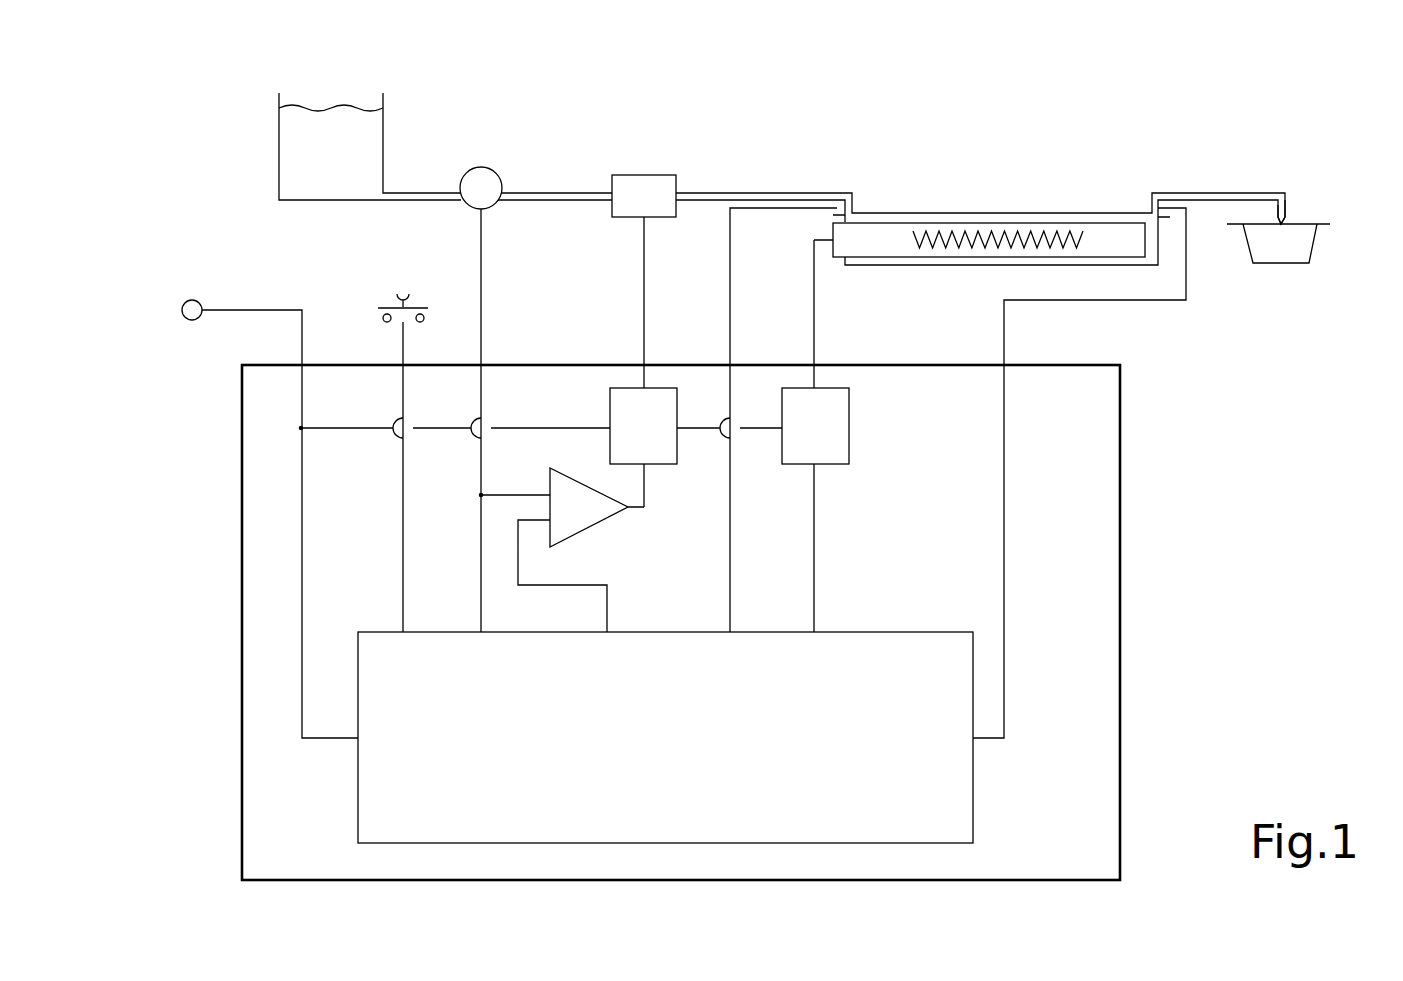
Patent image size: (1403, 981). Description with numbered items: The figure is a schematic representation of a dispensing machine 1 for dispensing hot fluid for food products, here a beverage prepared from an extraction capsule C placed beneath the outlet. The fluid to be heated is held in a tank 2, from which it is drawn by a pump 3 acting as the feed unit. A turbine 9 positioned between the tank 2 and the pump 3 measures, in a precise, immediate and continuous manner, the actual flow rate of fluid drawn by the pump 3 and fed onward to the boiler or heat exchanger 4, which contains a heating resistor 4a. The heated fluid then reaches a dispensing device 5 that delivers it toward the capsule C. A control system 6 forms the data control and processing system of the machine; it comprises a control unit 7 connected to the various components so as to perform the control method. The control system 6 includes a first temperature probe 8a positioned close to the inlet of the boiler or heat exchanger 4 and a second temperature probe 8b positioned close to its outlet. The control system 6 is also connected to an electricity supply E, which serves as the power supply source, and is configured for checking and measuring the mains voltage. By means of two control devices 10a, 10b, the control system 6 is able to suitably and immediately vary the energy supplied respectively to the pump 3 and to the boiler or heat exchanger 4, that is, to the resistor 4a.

The dispensing machine 1 is at (1250, 542).
The tank 2 is at (310, 145).
The pump 3 is at (641, 190).
The boiler or heat exchanger 4 is at (1095, 223).
The resistor 4a is at (990, 235).
The dispensing device 5 is at (1283, 205).
The control system 6 is at (1140, 642).
The control unit 7 is at (675, 741).
The first temperature probe 8a is at (825, 205).
The second temperature probe 8b is at (1173, 205).
The turbine 9 is at (480, 182).
The control device 10a is at (664, 446).
The control device 10b is at (836, 446).
The power supply source E is at (191, 300).
The extraction capsule C is at (1293, 245).